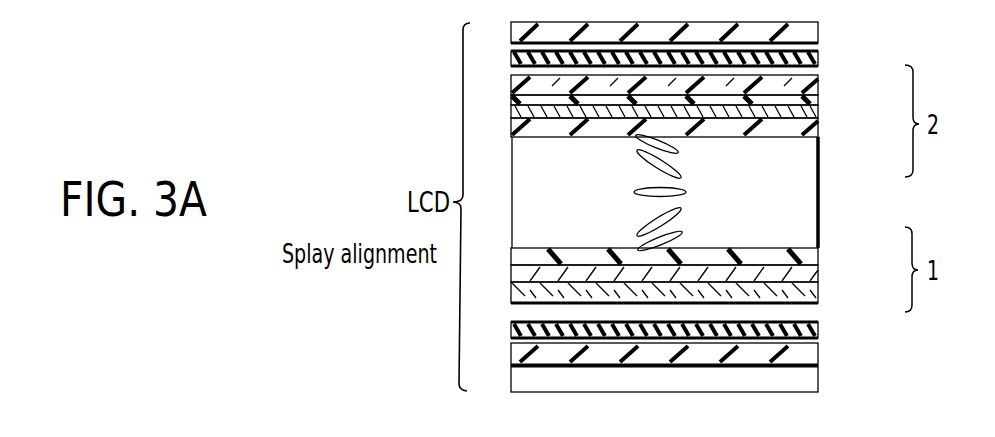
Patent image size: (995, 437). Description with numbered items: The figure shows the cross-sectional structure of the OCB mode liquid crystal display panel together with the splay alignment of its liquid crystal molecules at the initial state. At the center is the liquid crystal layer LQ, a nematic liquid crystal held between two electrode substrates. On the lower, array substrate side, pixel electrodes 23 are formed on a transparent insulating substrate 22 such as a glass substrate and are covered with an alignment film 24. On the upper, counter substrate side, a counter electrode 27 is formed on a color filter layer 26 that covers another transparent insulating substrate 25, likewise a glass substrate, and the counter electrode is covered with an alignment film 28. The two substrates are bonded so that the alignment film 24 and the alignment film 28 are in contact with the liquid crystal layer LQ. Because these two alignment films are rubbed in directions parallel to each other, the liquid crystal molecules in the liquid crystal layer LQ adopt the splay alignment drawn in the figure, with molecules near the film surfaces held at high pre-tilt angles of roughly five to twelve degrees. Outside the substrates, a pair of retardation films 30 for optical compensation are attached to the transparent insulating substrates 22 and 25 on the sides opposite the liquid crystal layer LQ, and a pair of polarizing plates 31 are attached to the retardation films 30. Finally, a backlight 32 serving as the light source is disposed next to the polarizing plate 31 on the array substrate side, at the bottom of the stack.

The polarizing plate 31 is at (808, 33).
The retardation film 30 is at (808, 59).
The transparent insulating substrate 25 is at (808, 87).
The color filter layer 26 is at (808, 100).
The counter electrode 27 is at (808, 111).
The alignment film 28 is at (808, 128).
The liquid crystal layer LQ is at (810, 195).
The alignment film 24 is at (808, 258).
The pixel electrode 23 is at (808, 275).
The transparent insulating substrate 22 is at (808, 292).
The backlight 32 is at (808, 381).